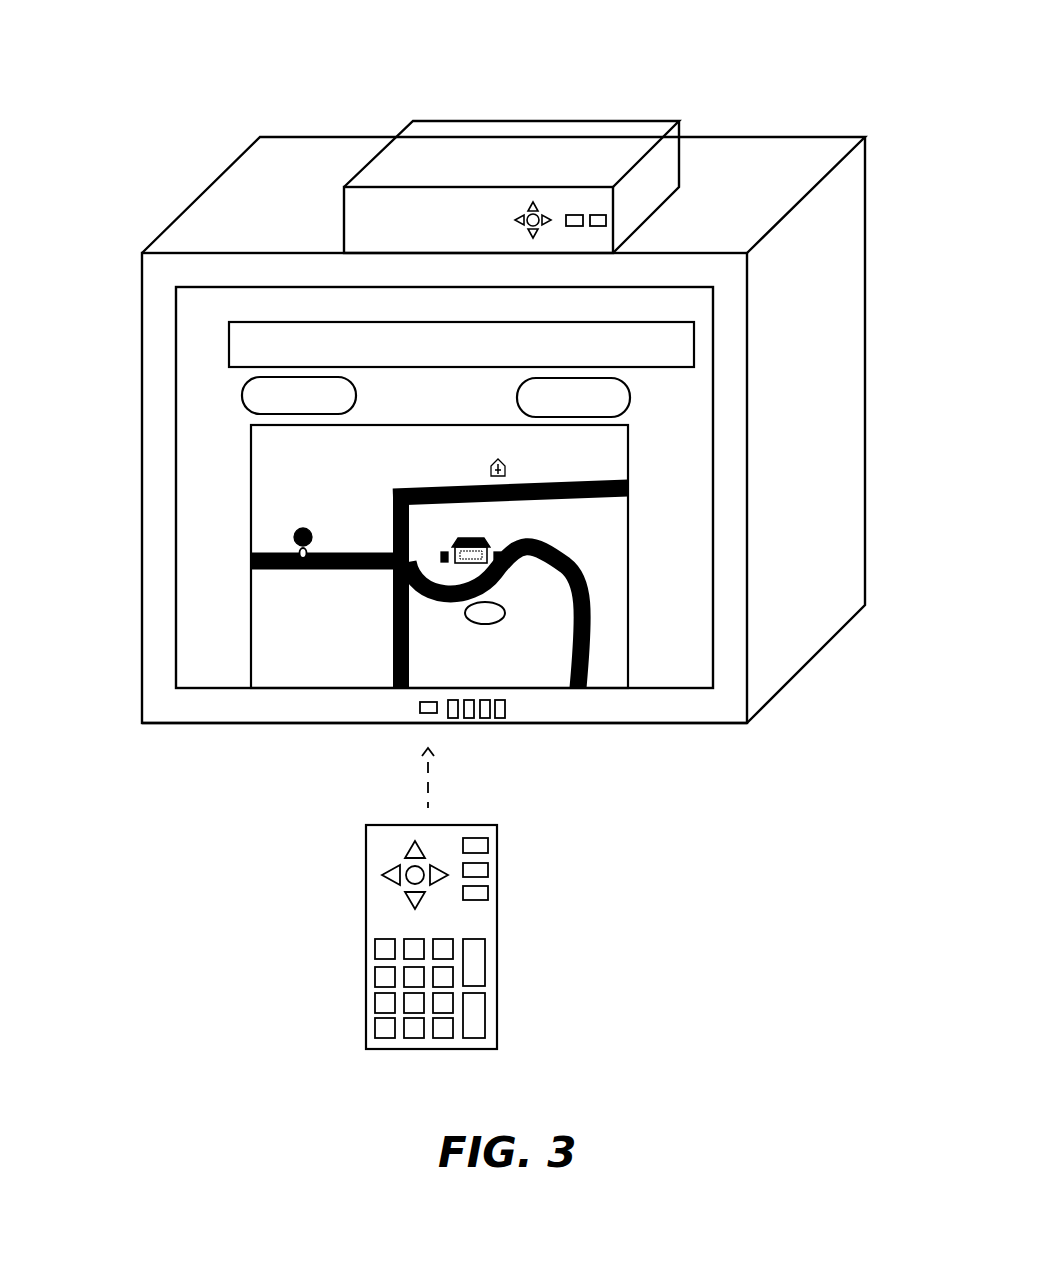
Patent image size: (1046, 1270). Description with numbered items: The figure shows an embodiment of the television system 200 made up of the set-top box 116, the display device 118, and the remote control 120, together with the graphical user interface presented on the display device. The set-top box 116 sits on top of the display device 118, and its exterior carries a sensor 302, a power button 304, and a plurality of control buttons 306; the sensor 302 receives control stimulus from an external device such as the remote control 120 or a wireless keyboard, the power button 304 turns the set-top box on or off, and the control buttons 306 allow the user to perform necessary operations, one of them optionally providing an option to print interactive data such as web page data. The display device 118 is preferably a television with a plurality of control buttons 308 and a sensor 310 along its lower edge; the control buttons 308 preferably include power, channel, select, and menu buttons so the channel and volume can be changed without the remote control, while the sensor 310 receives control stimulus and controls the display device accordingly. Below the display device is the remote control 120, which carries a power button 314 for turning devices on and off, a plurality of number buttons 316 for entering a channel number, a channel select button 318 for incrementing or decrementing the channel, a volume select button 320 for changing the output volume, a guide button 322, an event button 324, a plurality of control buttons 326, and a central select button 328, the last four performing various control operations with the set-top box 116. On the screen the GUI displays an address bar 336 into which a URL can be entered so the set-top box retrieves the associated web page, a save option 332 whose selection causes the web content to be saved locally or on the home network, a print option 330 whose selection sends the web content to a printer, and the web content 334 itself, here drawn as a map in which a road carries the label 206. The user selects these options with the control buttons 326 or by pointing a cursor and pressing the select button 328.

The television system 200 is at (824, 102).
The set-top box 116 is at (512, 147).
The display device 118 is at (651, 732).
The remote control 120 is at (425, 937).
The sensor 302 is at (598, 215).
The power button 304 is at (580, 215).
The control buttons 306 is at (548, 215).
The control buttons 308 is at (484, 716).
The sensor 310 is at (421, 713).
The power button 314 is at (483, 845).
The number buttons 316 is at (383, 1005).
The channel select button 318 is at (477, 955).
The volume select button 320 is at (477, 1000).
The guide button 322 is at (483, 870).
The event button 324 is at (483, 893).
The control buttons 326 is at (413, 853).
The select button 328 is at (413, 879).
The print option 330 is at (665, 384).
The save option 332 is at (217, 388).
The web content 334 is at (532, 556).
The address bar 336 is at (536, 330).
The road 206 is at (485, 613).